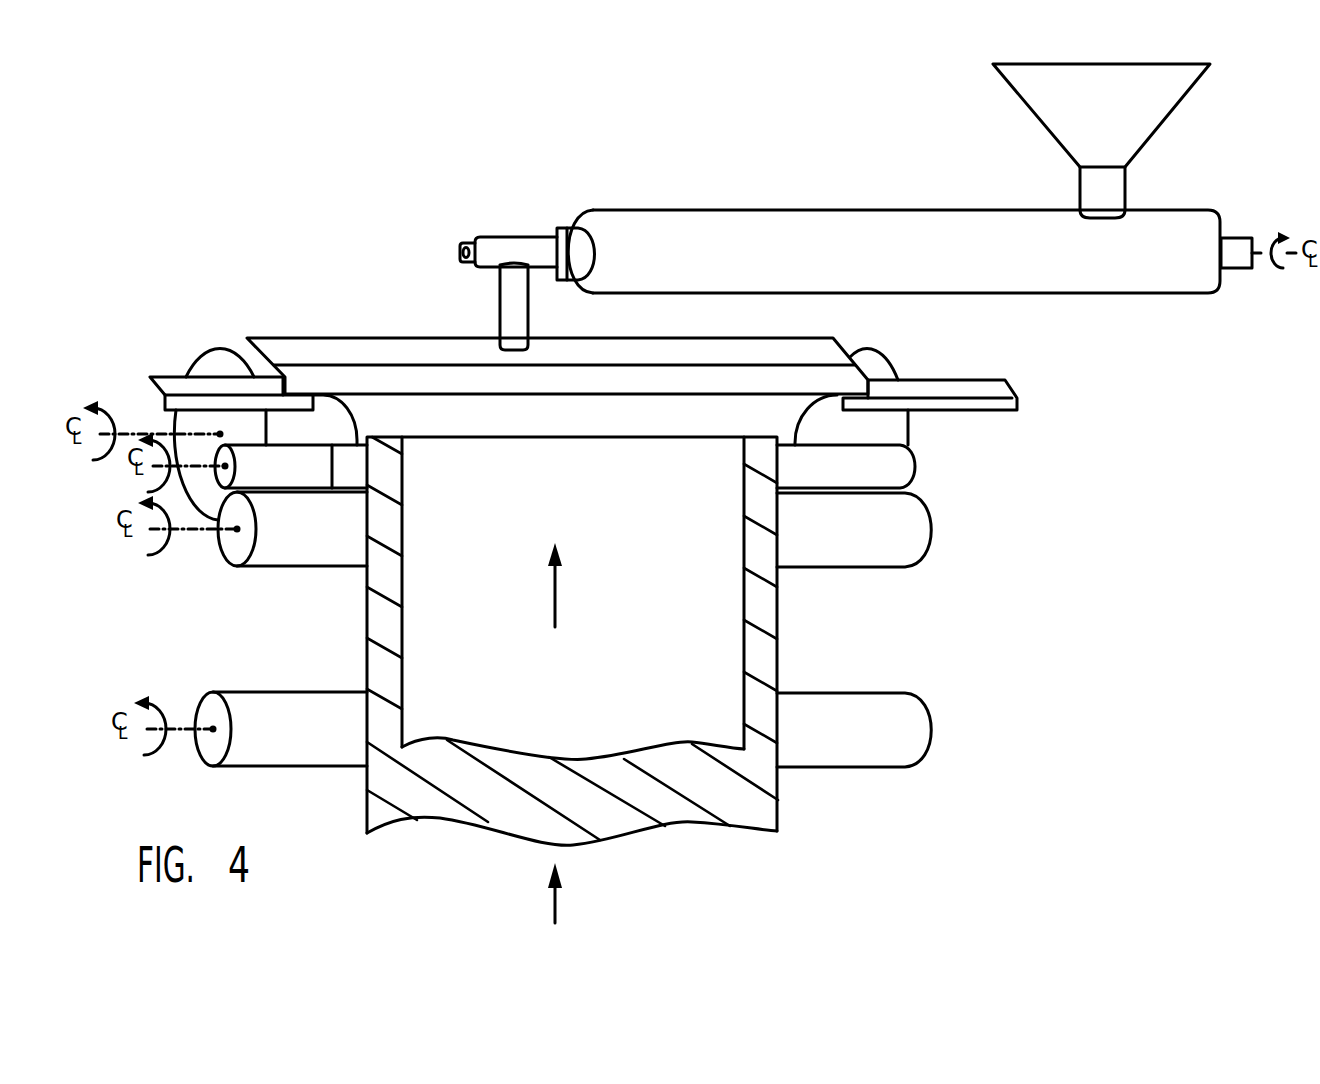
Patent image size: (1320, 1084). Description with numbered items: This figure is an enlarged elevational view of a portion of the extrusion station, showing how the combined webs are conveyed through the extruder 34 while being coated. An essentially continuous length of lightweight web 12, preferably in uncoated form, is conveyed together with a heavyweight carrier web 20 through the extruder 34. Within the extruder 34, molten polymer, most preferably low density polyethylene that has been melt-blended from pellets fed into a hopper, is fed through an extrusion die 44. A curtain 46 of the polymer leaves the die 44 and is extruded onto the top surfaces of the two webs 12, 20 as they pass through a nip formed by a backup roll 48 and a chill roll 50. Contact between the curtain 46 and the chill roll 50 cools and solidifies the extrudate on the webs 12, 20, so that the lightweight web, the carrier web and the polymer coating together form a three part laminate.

The lightweight web 12 is at (722, 620).
The heavyweight carrier web 20 is at (780, 785).
The extruder 34 is at (1088, 294).
The extrusion die 44 is at (840, 346).
The curtain 46 is at (787, 417).
The backup roll 48 is at (917, 467).
The chill roll 50 is at (203, 360).